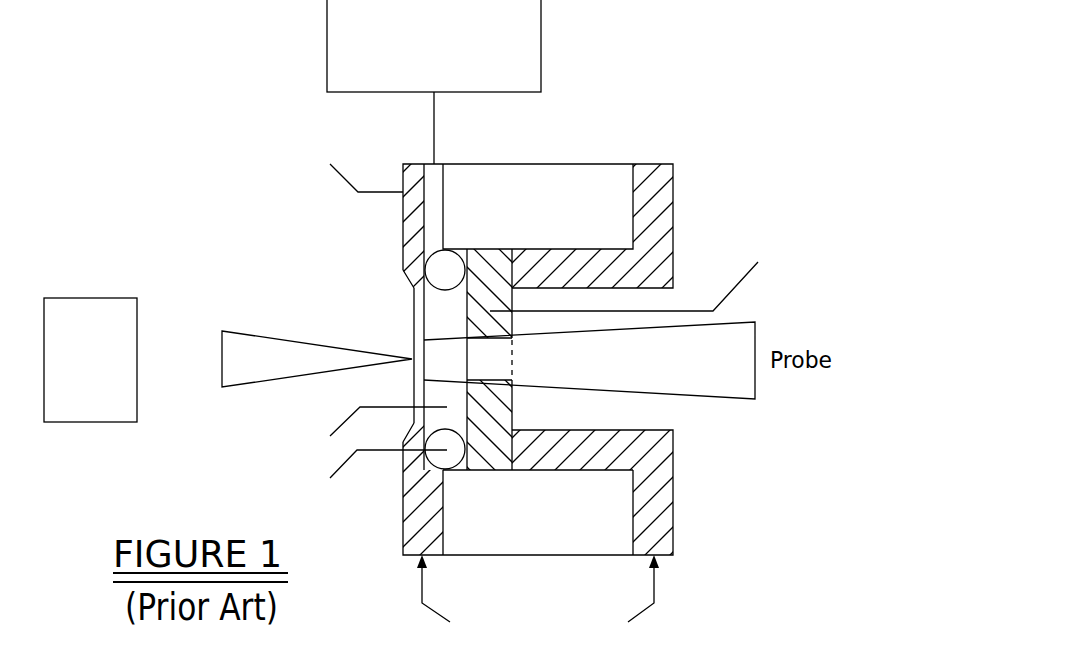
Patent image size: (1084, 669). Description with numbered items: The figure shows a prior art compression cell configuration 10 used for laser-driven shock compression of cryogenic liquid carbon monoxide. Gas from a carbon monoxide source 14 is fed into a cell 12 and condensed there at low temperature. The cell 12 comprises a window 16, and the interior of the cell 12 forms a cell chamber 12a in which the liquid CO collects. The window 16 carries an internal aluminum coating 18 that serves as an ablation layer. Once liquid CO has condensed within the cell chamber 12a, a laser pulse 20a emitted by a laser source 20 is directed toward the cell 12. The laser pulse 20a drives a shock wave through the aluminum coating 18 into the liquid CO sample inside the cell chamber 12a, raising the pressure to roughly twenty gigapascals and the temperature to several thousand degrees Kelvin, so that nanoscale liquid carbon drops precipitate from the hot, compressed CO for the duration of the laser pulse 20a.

The compression cell configuration 10 is at (638, 118).
The cell 12 is at (497, 410).
The cell chamber 12a is at (437, 325).
The carbon monoxide source 14 is at (327, 43).
The window 16 is at (413, 381).
The aluminum coating 18 is at (436, 312).
The laser source 20 is at (91, 298).
The laser pulse 20a is at (266, 348).